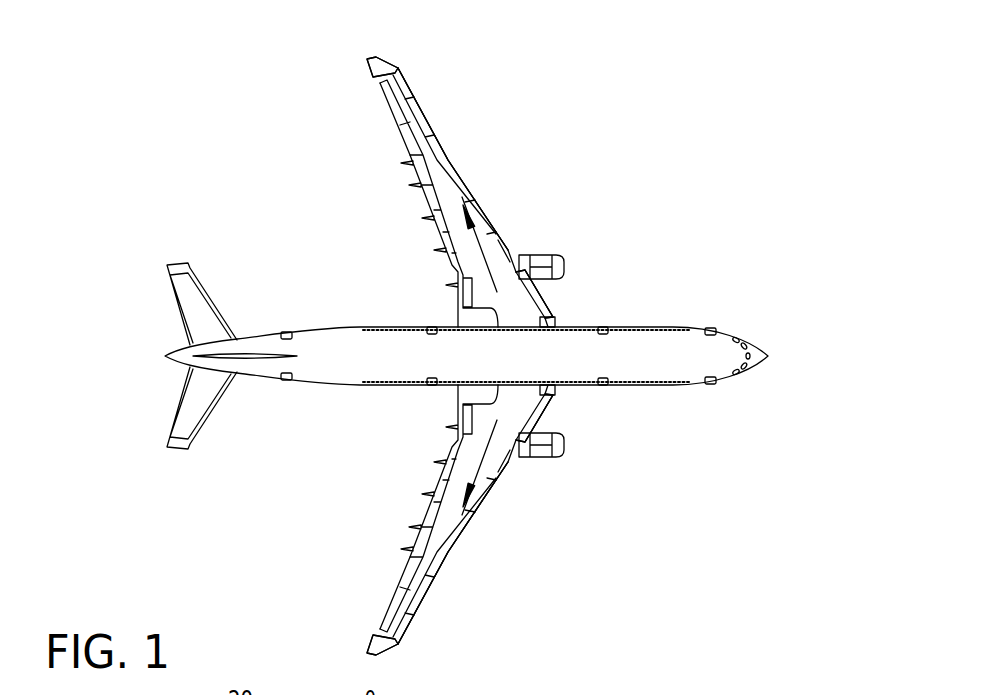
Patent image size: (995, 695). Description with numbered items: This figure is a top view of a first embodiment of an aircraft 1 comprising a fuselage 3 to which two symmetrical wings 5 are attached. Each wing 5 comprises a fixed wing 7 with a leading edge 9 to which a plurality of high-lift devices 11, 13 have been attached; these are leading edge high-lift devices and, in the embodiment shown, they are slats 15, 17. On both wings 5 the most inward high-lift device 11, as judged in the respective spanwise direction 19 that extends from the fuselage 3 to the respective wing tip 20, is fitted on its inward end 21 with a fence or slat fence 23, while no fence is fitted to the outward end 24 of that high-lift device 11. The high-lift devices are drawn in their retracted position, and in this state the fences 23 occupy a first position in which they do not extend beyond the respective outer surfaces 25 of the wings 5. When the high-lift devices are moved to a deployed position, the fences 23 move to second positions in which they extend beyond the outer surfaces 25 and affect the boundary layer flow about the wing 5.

The aircraft 1 is at (212, 134).
The fuselage 3 is at (380, 369).
The wing 5 is at (370, 222).
The fixed wing 7 is at (448, 183).
The leading edge 9 is at (406, 45).
The high-lift device 11 is at (545, 298).
The high-lift device 13 is at (457, 193).
The slat 15 is at (613, 357).
The slat 17 is at (517, 356).
The spanwise direction 19 is at (483, 247).
The wing tip 20 is at (336, 59).
The inward end 21 is at (550, 312).
The fence 23 is at (552, 318).
The outward end 24 is at (533, 255).
The outer surface 25 is at (457, 195).